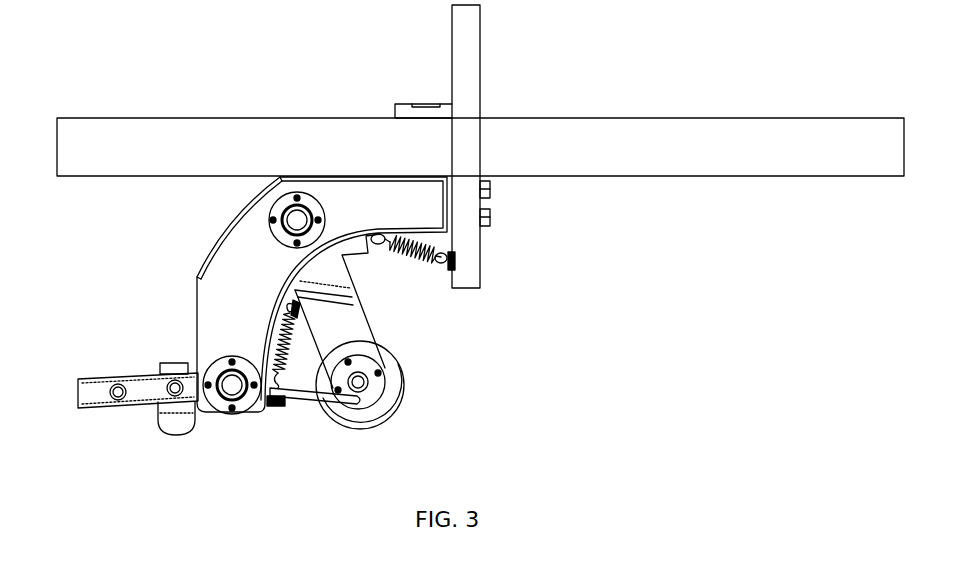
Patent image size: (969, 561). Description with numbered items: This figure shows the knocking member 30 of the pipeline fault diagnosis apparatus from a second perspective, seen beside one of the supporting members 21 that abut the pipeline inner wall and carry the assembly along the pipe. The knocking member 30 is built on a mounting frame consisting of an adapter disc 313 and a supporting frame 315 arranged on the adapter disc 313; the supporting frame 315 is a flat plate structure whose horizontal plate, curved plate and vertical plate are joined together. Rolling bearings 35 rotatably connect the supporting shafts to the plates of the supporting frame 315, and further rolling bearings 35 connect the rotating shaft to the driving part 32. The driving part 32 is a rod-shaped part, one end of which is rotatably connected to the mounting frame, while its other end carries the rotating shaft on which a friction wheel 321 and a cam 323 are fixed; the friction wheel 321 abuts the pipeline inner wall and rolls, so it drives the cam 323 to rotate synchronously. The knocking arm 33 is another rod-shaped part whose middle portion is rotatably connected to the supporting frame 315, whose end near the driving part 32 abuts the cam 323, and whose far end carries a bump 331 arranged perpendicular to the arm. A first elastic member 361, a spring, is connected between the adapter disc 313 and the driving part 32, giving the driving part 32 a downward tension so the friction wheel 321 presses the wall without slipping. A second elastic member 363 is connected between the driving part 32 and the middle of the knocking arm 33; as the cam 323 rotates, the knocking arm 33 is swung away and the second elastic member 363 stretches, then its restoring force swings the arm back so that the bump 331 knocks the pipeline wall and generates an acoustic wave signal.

The supporting member 21 is at (582, 140).
The adapter disc 313 is at (465, 50).
The supporting frame 315 is at (243, 237).
The rolling bearing 35 is at (285, 204).
The driving part 32 is at (352, 343).
The first elastic member 361 is at (447, 247).
The second elastic member 363 is at (300, 326).
The friction wheel 321 is at (400, 366).
The cam 323 is at (365, 394).
The knocking arm 33 is at (102, 395).
The bump 331 is at (160, 420).
The knocking member 30 is at (650, 339).